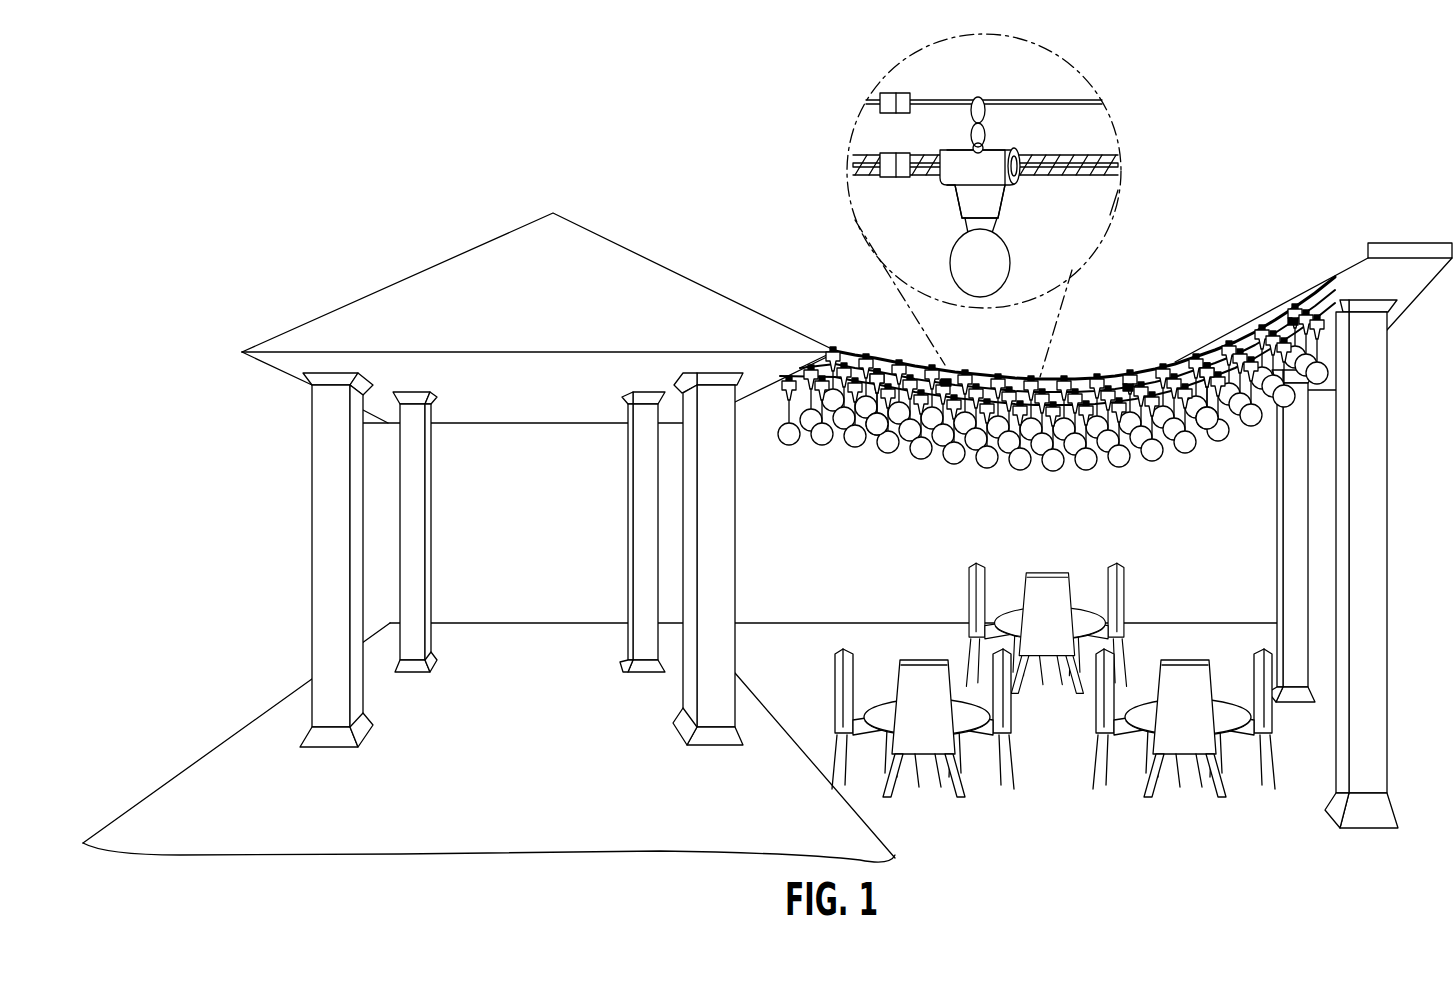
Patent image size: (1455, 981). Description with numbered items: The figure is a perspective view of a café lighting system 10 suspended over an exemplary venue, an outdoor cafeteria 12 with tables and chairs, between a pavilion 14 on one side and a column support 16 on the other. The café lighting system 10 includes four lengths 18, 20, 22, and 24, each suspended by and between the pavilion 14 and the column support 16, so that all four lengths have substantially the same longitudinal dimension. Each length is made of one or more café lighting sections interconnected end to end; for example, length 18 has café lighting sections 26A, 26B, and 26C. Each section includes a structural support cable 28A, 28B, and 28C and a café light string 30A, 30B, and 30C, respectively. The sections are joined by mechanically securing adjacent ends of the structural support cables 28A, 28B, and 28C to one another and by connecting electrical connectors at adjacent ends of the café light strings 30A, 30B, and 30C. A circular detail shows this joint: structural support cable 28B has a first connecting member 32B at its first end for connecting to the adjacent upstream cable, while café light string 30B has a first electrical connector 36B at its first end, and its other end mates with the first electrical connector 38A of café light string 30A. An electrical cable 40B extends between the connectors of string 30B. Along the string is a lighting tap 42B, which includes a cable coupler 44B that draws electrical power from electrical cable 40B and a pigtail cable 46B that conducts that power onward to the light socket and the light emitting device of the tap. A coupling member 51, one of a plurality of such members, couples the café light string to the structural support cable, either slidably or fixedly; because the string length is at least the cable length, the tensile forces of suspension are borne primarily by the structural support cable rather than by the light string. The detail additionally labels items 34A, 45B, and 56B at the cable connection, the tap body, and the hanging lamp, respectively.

The café lighting system 10 is at (1041, 345).
The outdoor cafeteria 12 is at (1112, 806).
The pavilion 14 is at (695, 285).
The column support 16 is at (1356, 262).
The length 18 is at (1041, 381).
The length 20 is at (790, 358).
The length 22 is at (766, 370).
The length 24 is at (810, 446).
The café lighting section 26A is at (905, 355).
The café lighting section 26B is at (1065, 365).
The café lighting section 26C is at (1224, 338).
The structural support cable 28A is at (950, 380).
The structural support cable 28B is at (1130, 382).
The structural support cable 28C is at (1292, 318).
The café light string 30A is at (872, 414).
The café light string 30B is at (1120, 428).
The café light string 30C is at (1215, 400).
The first connecting member 32B is at (905, 93).
The support wire 34A is at (888, 104).
The first electrical connector 36B is at (898, 178).
The first electrical connector 38A is at (878, 170).
The electrical cable 40B is at (1116, 190).
The lighting tap 42B is at (1038, 140).
The cable coupler 44B is at (991, 196).
The socket body 45B is at (1005, 195).
The pigtail cable 46B is at (999, 210).
The coupling member 51 is at (978, 97).
The light bulb 56B is at (1010, 252).